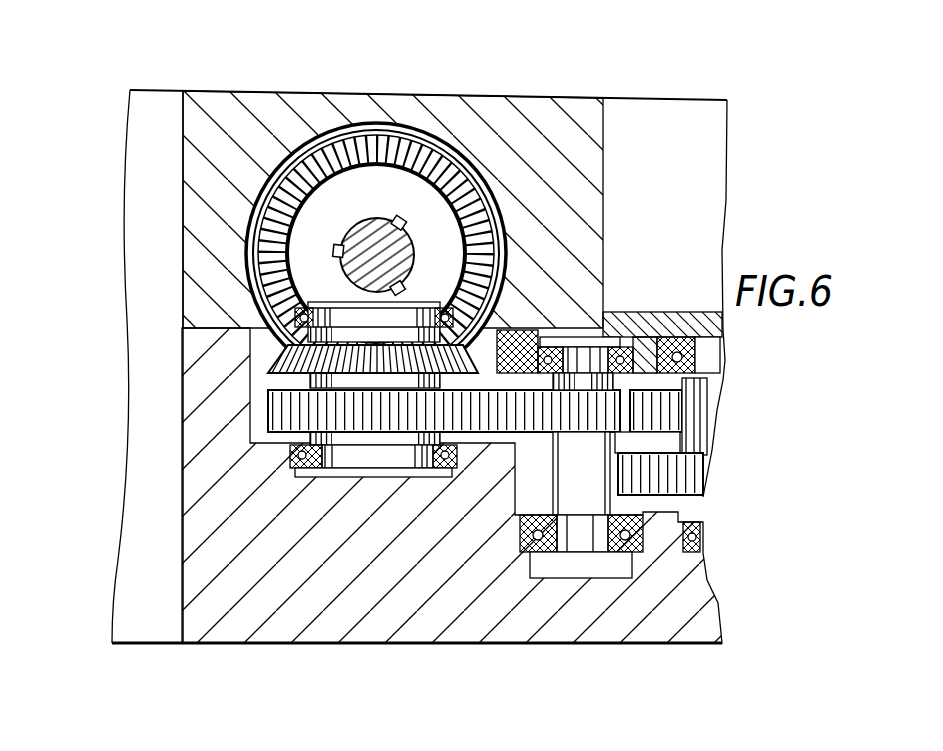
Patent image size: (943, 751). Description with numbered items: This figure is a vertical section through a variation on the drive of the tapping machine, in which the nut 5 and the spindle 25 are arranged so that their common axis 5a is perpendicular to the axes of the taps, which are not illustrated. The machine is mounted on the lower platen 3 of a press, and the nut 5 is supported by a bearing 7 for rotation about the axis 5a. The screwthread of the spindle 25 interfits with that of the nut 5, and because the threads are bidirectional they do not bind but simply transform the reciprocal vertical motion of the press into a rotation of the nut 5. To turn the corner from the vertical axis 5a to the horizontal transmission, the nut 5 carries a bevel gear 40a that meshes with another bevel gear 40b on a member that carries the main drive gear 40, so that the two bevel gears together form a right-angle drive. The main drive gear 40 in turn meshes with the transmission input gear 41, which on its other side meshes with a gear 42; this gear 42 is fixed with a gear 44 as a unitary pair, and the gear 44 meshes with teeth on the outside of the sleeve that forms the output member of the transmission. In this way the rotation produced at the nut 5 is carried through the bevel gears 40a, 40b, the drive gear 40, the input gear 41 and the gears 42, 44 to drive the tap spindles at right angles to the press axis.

The lower platen 3 is at (166, 115).
The nut 5 is at (378, 182).
The axis 5a is at (370, 437).
The bearing 7 is at (445, 462).
The spindle 25 is at (398, 232).
The main drive gear 40 is at (487, 410).
The bevel gear 40a is at (312, 140).
The bevel gear 40b is at (277, 358).
The input gear 41 is at (596, 490).
The gear 42 is at (700, 412).
The gear 44 is at (700, 471).